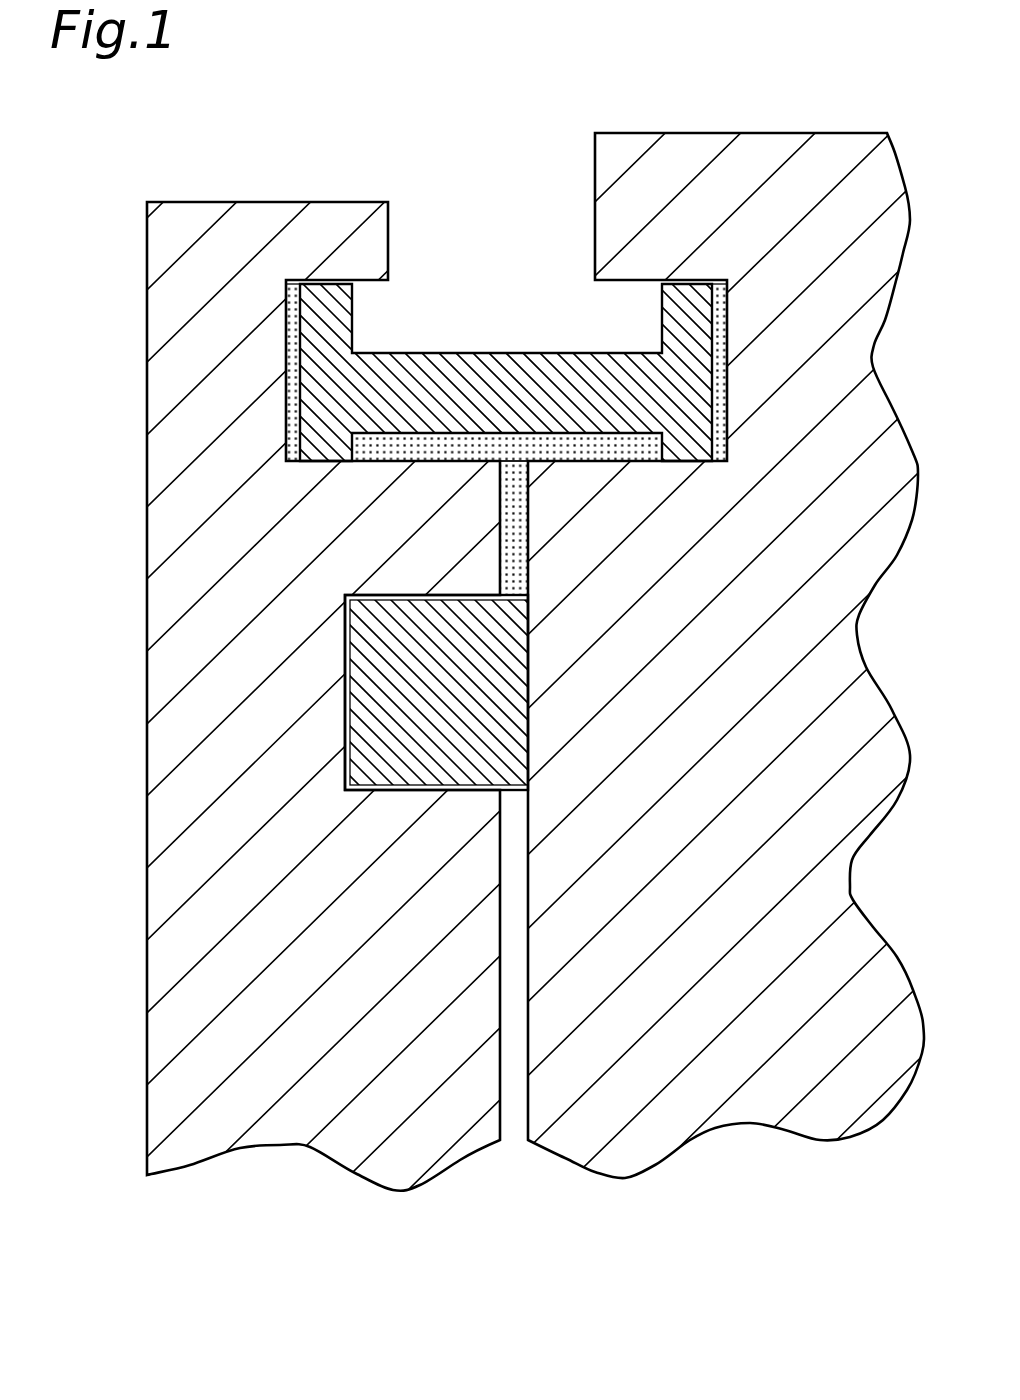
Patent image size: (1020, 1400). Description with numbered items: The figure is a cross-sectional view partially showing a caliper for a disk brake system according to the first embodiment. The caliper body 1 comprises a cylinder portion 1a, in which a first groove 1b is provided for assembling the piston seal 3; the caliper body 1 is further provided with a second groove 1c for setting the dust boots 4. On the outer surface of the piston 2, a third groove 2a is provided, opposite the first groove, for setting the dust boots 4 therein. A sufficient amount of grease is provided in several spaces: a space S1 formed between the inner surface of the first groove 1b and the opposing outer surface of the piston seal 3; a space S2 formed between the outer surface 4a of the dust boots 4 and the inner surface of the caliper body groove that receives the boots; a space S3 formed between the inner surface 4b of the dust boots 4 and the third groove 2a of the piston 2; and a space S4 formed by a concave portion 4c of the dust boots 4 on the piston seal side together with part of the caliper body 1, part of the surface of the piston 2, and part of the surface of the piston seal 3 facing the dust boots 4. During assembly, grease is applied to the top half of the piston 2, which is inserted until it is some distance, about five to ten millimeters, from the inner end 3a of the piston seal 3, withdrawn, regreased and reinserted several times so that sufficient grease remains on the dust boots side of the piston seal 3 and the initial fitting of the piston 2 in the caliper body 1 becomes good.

The caliper body 1 is at (322, 1088).
The cylinder portion 1a is at (505, 1118).
The first groove 1b is at (390, 793).
The second groove 1c is at (286, 318).
The piston 2 is at (688, 1065).
The third groove 2a is at (730, 415).
The piston seal 3 is at (500, 755).
The inner end of the piston seal 3a is at (528, 788).
The dust boots 4 is at (535, 352).
The outer surface of the dust boots 4a is at (290, 408).
The inner surface of the dust boots 4b is at (724, 322).
The concave portion of the dust boots 4c is at (636, 462).
The space S1 is at (345, 680).
The space S2 is at (293, 295).
The space S3 is at (727, 286).
The space S4 is at (540, 462).